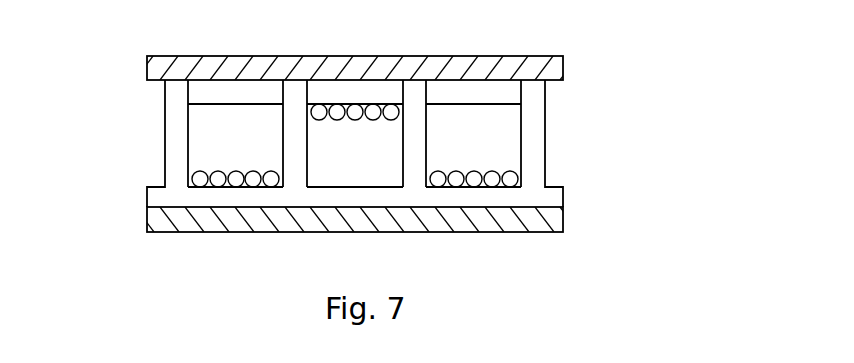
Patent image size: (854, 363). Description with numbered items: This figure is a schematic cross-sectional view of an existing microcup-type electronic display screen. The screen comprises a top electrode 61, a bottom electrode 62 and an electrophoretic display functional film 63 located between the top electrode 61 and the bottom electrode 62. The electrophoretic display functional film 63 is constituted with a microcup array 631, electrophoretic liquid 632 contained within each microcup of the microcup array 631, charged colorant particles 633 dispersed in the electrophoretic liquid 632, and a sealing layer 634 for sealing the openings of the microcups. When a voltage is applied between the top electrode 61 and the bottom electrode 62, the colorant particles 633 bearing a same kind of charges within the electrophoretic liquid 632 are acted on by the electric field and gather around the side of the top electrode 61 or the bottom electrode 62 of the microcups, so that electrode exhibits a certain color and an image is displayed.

The top electrode 61 is at (557, 69).
The bottom electrode 62 is at (548, 223).
The electrophoretic display functional film 63 is at (379, 151).
The microcup array 631 is at (533, 106).
The electrophoretic liquid 632 is at (503, 130).
The charged colorant particles 633 is at (196, 178).
The sealing layer 634 is at (199, 96).